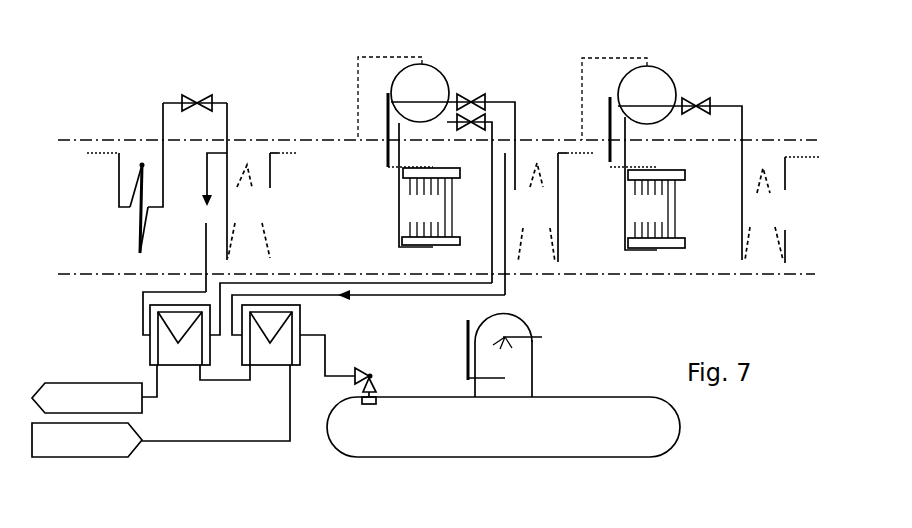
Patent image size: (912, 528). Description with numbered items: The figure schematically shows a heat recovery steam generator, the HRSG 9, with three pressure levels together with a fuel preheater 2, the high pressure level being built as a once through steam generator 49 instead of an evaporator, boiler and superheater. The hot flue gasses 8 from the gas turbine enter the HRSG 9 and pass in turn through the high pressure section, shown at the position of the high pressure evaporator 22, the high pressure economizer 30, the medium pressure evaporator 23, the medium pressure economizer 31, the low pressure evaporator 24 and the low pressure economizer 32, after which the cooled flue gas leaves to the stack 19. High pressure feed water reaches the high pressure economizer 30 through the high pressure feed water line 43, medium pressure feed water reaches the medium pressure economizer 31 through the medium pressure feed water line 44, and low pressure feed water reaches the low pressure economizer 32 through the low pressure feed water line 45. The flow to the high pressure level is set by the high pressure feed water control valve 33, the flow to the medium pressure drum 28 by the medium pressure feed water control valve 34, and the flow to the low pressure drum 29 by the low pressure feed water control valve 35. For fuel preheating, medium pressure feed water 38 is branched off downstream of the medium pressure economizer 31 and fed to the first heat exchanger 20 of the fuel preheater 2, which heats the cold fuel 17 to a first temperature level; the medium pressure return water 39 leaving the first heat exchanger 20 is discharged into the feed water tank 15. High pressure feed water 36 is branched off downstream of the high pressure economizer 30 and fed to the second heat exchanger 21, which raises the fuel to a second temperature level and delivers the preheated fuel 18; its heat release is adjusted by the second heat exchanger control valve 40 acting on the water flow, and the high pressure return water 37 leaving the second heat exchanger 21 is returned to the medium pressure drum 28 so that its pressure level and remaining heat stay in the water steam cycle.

The fuel preheater 2 is at (205, 421).
The hot flue gasses 8 is at (104, 233).
The HRSG 9 is at (790, 44).
The feed water tank 15 is at (503, 386).
The fuel 17 is at (87, 440).
The preheated fuel 18 is at (87, 398).
The stack 19 is at (788, 238).
The first heat exchanger 20 is at (271, 348).
The second heat exchanger 21 is at (180, 348).
The high pressure evaporator 22 is at (201, 222).
The medium pressure evaporator 23 is at (424, 170).
The low pressure evaporator 24 is at (647, 173).
The medium pressure drum 28 is at (403, 98).
The low pressure drum 29 is at (629, 99).
The high pressure economizer 30 is at (249, 211).
The medium pressure economizer 31 is at (530, 224).
The low pressure economizer 32 is at (764, 214).
The high pressure feed water control valve 33 is at (187, 163).
The medium pressure feed water control valve 34 is at (482, 127).
The low pressure feed water control valve 35 is at (709, 164).
The high pressure feed water 36 is at (142, 322).
The high pressure return water 37 is at (376, 282).
The medium pressure feed water 38 is at (510, 284).
The medium pressure return water 39 is at (326, 342).
The second heat exchanger control valve 40 is at (469, 202).
The high pressure feed water line 43 is at (278, 154).
The medium pressure feed water line 44 is at (568, 154).
The low pressure feed water line 45 is at (801, 158).
The once through steam generator 49 is at (142, 164).